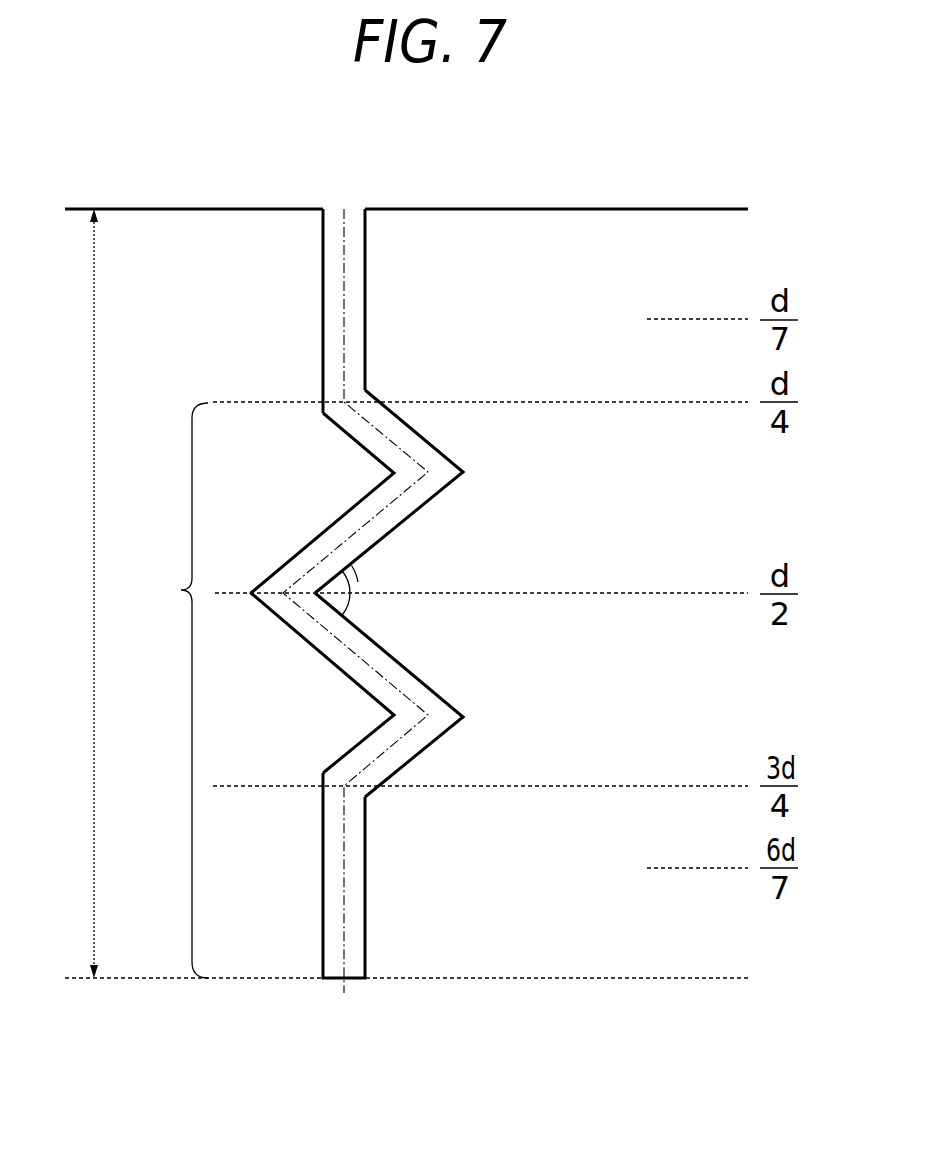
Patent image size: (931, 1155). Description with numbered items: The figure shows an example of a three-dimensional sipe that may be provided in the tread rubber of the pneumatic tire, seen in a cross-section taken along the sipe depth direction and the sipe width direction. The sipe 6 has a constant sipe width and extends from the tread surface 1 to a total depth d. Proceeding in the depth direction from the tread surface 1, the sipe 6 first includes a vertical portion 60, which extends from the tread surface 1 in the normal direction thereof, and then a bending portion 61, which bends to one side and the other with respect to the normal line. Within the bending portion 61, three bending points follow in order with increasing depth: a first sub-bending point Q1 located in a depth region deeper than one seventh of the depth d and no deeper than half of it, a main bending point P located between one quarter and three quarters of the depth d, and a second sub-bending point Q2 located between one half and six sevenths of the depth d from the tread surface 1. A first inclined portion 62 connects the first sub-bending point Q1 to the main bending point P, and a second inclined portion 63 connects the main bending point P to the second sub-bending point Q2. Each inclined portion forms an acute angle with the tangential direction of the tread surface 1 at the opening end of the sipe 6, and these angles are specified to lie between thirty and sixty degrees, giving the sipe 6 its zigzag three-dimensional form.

The tread surface 1 is at (412, 208).
The sipe 6 is at (334, 545).
The vertical portion 60 is at (347, 318).
The bending portion 61 is at (334, 684).
The first inclined portion 62 is at (398, 508).
The second inclined portion 63 is at (413, 680).
The main bending point P is at (266, 608).
The first sub-bending point Q1 is at (433, 473).
The second sub-bending point Q2 is at (428, 715).
The depth of the sipe d is at (406, 593).